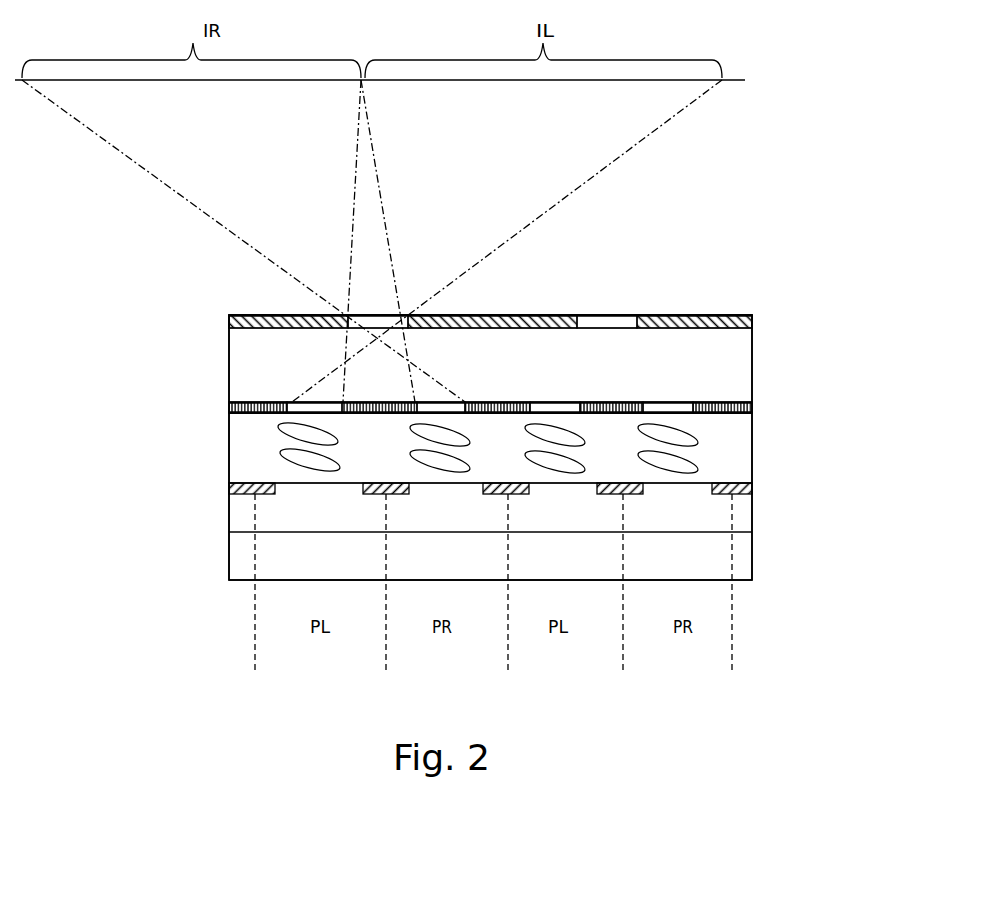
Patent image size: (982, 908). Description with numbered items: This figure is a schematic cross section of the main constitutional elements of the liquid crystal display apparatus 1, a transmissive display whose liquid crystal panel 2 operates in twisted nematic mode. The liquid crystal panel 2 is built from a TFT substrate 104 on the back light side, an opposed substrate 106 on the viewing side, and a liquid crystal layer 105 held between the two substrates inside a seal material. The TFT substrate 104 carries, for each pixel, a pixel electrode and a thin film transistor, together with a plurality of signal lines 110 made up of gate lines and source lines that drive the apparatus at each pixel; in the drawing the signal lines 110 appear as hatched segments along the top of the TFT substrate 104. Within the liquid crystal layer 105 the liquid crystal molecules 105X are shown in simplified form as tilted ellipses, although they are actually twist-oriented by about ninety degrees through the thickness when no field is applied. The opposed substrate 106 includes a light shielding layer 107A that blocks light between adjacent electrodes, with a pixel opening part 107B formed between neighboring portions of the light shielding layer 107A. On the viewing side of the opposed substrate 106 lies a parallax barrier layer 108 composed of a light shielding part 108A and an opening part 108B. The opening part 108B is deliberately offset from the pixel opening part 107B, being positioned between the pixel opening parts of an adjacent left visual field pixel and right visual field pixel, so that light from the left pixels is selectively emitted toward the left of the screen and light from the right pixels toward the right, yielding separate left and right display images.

The liquid crystal display apparatus 1 is at (755, 293).
The liquid crystal panel 2 is at (815, 318).
The TFT substrate 104 is at (757, 482).
The liquid crystal layer 105 is at (716, 426).
The liquid crystal molecules 105X is at (295, 456).
The opposed substrate 106 is at (753, 317).
The light shielding layer 107A is at (228, 403).
The pixel opening part 107B is at (573, 402).
The parallax barrier layer 108 is at (220, 322).
The light shielding part 108A is at (260, 315).
The opening part 108B is at (598, 313).
The signal lines 110 is at (230, 494).